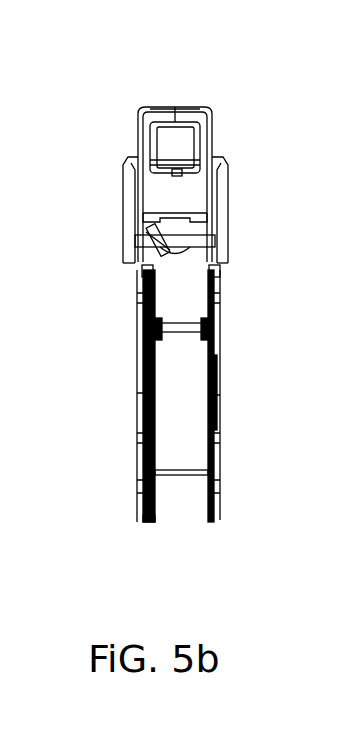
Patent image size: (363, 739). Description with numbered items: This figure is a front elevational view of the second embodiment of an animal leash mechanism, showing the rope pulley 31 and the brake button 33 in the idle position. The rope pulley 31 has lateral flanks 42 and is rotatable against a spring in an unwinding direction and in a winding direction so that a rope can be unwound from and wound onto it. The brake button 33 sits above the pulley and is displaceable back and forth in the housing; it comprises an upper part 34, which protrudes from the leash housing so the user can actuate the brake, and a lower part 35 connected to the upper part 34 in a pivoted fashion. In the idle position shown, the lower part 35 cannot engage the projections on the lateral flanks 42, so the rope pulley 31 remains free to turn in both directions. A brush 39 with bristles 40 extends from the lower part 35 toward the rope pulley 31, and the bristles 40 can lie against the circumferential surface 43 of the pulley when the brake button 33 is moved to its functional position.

The rope pulley 31 is at (222, 458).
The brake button 33 is at (214, 119).
The upper part 34 is at (170, 112).
The lower part 35 is at (227, 245).
The brush 39 is at (155, 248).
The bristles 40 is at (160, 253).
The lateral flanks 42 is at (137, 340).
The circumferential surface 43 is at (150, 522).